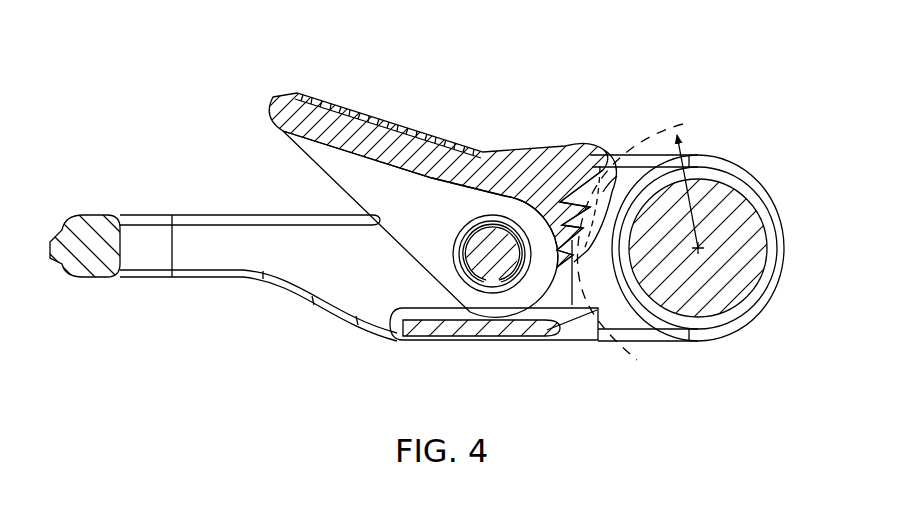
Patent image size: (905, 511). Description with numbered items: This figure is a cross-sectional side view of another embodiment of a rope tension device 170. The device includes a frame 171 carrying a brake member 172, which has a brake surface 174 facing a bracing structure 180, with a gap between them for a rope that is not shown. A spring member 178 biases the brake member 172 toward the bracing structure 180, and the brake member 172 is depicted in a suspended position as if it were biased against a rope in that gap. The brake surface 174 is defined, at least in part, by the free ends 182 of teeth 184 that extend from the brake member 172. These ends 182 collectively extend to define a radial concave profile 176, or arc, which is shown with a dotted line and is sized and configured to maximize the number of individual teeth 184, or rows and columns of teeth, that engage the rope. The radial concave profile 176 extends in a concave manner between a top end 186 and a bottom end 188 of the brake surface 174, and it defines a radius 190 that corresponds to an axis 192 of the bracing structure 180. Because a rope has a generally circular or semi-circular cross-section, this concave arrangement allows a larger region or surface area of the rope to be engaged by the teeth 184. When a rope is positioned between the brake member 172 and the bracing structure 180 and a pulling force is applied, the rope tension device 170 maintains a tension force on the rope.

The rope tension device 170 is at (688, 46).
The frame 171 is at (337, 311).
The brake member 172 is at (507, 149).
The brake surface 174 is at (611, 178).
The radial concave profile 176 is at (582, 275).
The spring member 178 is at (452, 193).
The bracing structure 180 is at (724, 162).
The free ends of teeth 182 is at (600, 176).
The teeth 184 is at (585, 178).
The top end of brake surface 186 is at (620, 175).
The bottom end of brake surface 188 is at (576, 245).
The radius 190 is at (690, 215).
The axis of bracing structure 192 is at (698, 248).